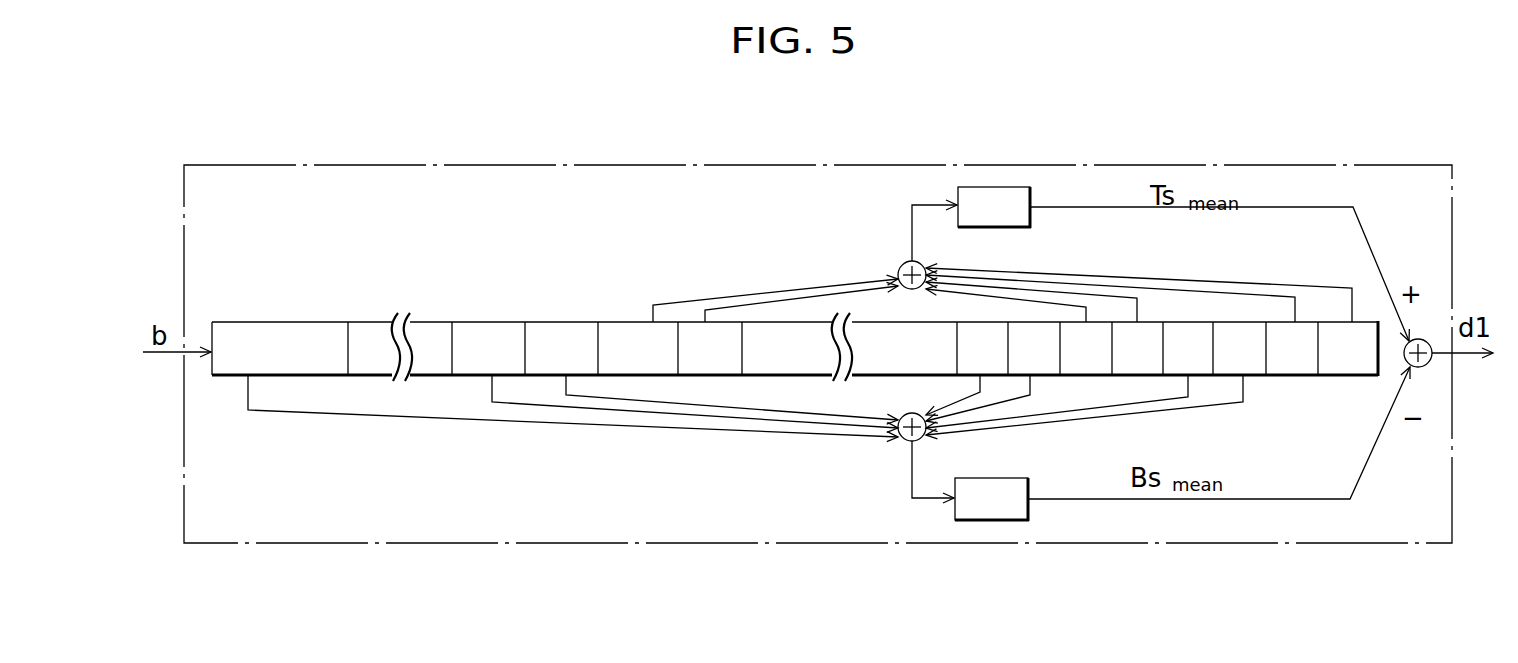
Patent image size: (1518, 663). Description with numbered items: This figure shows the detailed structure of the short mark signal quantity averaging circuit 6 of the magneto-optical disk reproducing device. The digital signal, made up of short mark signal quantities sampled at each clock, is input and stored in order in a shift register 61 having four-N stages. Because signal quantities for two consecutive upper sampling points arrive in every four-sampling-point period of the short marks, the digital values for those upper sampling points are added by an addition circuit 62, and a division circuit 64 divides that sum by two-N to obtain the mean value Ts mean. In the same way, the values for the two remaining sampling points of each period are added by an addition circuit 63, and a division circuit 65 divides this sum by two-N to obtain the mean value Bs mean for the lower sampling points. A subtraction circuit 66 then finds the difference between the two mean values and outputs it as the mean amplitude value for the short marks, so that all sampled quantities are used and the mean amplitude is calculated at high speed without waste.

The short mark signal quantity averaging circuit 6 is at (818, 310).
The shift register 61 is at (274, 322).
The addition circuit 62 is at (901, 264).
The addition circuit 63 is at (905, 441).
The division circuit 64 is at (1031, 191).
The division circuit 65 is at (1030, 490).
The subtraction circuit 66 is at (1406, 369).